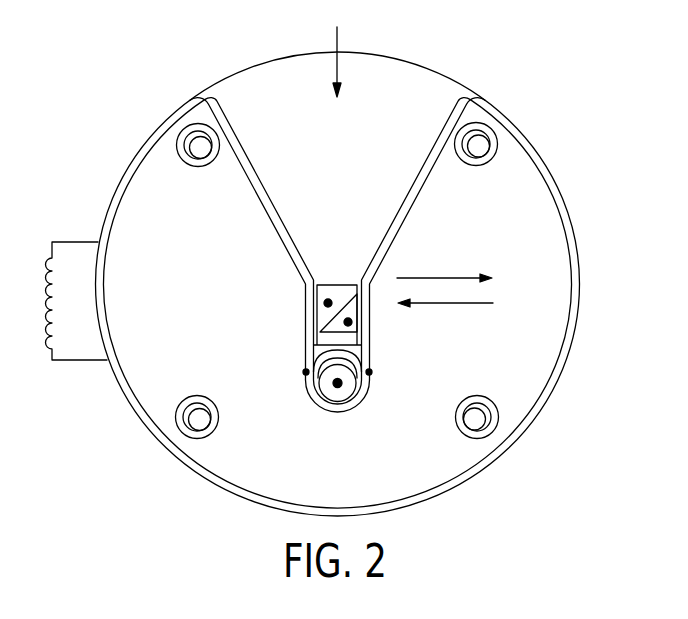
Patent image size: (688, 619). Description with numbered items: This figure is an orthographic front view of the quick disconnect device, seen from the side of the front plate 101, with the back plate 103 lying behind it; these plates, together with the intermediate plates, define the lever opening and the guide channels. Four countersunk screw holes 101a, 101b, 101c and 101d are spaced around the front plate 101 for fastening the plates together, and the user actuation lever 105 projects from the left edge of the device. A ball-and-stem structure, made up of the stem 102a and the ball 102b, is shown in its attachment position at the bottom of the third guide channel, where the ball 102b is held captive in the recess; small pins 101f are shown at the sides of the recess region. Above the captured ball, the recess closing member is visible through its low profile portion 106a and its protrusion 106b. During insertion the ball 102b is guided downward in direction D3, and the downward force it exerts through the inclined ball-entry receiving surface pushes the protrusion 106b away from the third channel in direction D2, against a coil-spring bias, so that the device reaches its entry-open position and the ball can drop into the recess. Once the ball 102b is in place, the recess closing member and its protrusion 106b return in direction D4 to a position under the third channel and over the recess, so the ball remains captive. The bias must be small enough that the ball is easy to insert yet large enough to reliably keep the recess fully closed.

The front plate 101 is at (581, 283).
The countersunk screw hole 101a is at (496, 137).
The countersunk screw hole 101b is at (498, 421).
The countersunk screw hole 101c is at (196, 438).
The countersunk screw hole 101d is at (186, 128).
The locating pins 101f is at (306, 372).
The stem 102a is at (339, 386).
The ball 102b is at (318, 357).
The back plate 103 is at (436, 72).
The user actuation lever 105 is at (83, 242).
The low profile portion 106a is at (327, 299).
The protrusion 106b is at (347, 318).
The direction D2 is at (440, 276).
The direction D3 is at (335, 50).
The direction D4 is at (450, 307).